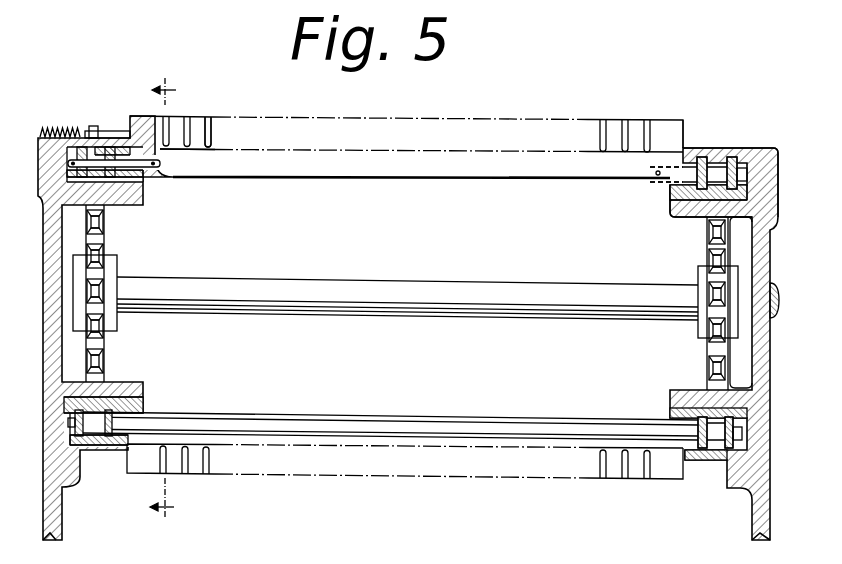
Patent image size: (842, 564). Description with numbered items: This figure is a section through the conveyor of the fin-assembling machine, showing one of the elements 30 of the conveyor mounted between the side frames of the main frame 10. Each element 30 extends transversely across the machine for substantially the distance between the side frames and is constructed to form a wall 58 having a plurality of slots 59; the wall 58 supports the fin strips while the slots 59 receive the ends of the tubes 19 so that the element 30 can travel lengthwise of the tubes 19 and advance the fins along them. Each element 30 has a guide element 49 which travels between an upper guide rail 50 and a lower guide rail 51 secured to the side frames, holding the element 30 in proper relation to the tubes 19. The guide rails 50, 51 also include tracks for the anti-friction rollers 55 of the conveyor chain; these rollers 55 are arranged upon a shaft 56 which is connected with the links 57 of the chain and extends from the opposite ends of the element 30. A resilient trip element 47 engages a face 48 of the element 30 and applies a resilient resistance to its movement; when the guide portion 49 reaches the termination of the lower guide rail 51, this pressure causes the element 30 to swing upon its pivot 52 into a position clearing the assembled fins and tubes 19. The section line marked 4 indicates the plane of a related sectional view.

The section line 4- 4 is at (163, 298).
The main frame 10 is at (628, 320).
The tubes 19 is at (208, 151).
The elements of the conveyor 30 is at (660, 119).
The trip element 47 is at (110, 130).
The face of the elements 48 is at (680, 120).
The guide element 49 is at (689, 165).
The upper guide rail 50 is at (722, 166).
The lower guide rail 51 is at (670, 193).
The pivot 52 is at (652, 182).
The anti-friction rollers 55 is at (735, 148).
The shaft 56 is at (746, 177).
The links 57 is at (742, 193).
The wall 58 is at (208, 118).
The slots 59 is at (625, 120).